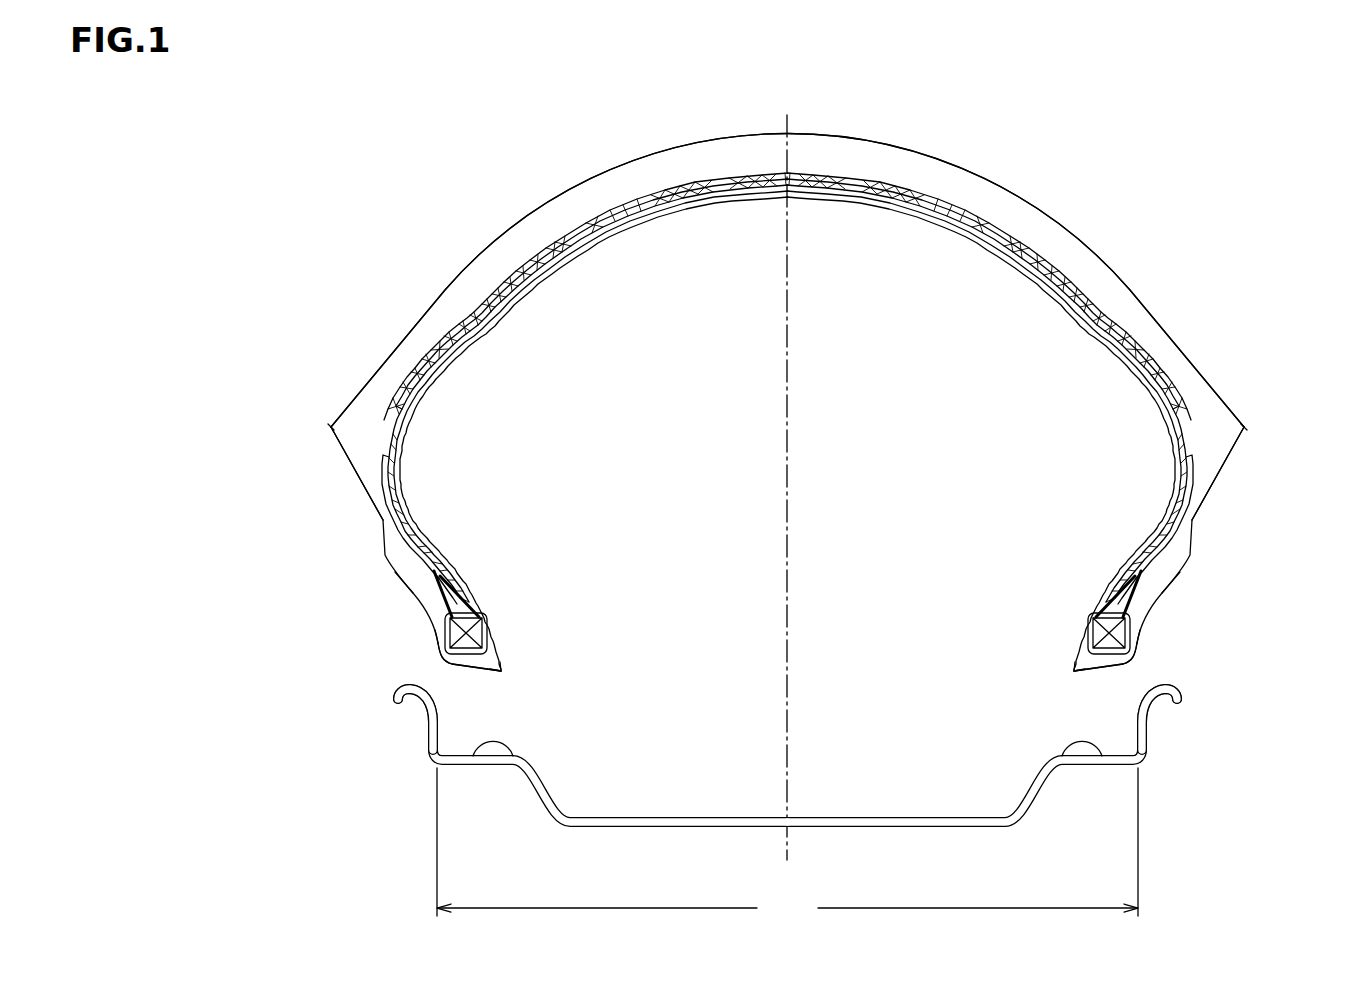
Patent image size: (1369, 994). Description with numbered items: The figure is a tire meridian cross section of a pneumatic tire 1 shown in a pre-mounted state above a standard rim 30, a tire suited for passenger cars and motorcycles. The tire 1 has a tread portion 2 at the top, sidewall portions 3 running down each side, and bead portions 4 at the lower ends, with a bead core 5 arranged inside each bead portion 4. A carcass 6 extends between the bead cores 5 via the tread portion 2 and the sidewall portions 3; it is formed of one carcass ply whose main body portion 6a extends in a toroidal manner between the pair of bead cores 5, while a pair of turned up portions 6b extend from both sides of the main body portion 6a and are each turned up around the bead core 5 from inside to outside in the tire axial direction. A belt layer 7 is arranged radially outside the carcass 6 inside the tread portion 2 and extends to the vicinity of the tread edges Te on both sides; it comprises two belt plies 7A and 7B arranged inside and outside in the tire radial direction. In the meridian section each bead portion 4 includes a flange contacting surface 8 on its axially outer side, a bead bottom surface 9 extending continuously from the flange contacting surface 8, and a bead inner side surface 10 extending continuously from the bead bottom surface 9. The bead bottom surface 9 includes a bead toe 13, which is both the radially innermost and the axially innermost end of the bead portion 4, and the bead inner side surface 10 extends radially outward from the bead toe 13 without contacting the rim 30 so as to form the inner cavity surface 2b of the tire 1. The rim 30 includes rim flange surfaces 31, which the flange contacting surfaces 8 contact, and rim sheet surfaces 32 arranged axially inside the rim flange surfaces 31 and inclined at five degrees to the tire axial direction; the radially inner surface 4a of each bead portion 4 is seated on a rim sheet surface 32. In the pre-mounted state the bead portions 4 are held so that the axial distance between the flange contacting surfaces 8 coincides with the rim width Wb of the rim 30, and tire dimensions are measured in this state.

The pneumatic tire 1 is at (1270, 130).
The tread portion 2 is at (1097, 155).
The inner cavity surface 2b is at (850, 202).
The sidewall portion 3 is at (1242, 470).
The bead portion 4 is at (1175, 581).
The inner surface of bead portion 4a is at (1095, 680).
The bead core 5 is at (1097, 622).
The carcass 6 is at (787, 419).
The main body portion 6a is at (1176, 452).
The turned up portion 6b is at (1180, 494).
The belt layer 7 is at (787, 232).
The belt ply 7A is at (892, 192).
The belt ply 7B is at (990, 230).
The flange contacting surface 8 is at (1140, 622).
The bead bottom surface 9 is at (1117, 665).
The bead inner side surface 10 is at (1078, 642).
The bead toe 13 is at (1075, 672).
The rim 30 is at (821, 794).
The rim flange surface 31 is at (440, 733).
The rim sheet surface 32 is at (517, 767).
The tread edge Te is at (331, 427).
The rim width Wb is at (787, 845).